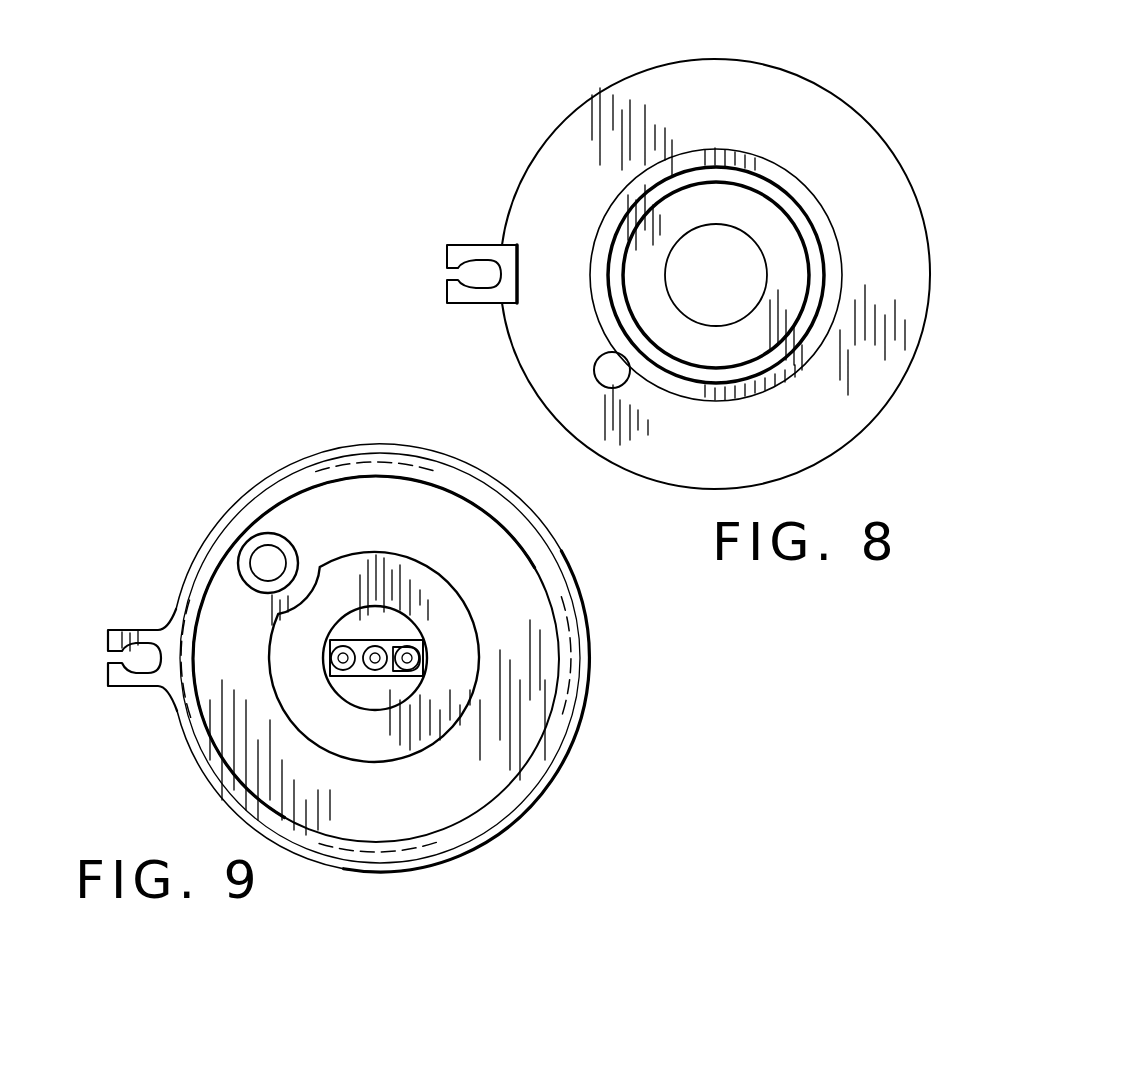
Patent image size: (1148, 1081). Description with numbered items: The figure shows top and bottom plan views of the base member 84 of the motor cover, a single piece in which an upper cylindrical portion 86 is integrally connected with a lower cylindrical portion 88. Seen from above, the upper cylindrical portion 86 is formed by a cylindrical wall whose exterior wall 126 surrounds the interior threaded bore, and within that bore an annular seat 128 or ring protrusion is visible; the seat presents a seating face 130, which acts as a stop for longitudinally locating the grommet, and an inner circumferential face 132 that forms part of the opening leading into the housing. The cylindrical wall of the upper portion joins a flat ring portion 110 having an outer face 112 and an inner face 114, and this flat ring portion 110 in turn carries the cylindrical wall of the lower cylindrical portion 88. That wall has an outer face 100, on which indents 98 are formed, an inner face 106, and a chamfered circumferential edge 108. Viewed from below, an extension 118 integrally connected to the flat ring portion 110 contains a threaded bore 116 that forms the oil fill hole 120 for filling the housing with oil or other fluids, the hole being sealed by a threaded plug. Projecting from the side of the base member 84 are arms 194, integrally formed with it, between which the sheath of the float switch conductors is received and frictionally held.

In FIG. 8, the base member 84 is at (840, 76).
In FIG. 9, the base member 84 is at (598, 738).
In FIG. 8, the upper cylindrical portion 86 is at (596, 206).
In FIG. 8, the lower cylindrical portion 88 is at (550, 122).
In FIG. 9, the lower cylindrical portion 88 is at (266, 462).
In FIG. 9, the indents 98 is at (373, 462).
In FIG. 9, the outer face 100 is at (556, 556).
In FIG. 9, the inner face 106 is at (470, 516).
In FIG. 9, the chamfered circumferential edge 108 is at (517, 788).
In FIG. 8, the flat ring portion 110 is at (862, 395).
In FIG. 9, the flat ring portion 110 is at (520, 600).
In FIG. 8, the outer face 112 is at (691, 119).
In FIG. 9, the inner face 114 is at (354, 526).
In FIG. 9, the threaded bore 116 is at (270, 550).
In FIG. 9, the extension 118 is at (278, 532).
In FIG. 9, the oil fill hole 120 is at (266, 567).
In FIG. 8, the exterior wall 126 is at (773, 388).
In FIG. 8, the annular seat 128 is at (762, 215).
In FIG. 8, the seating face 130 is at (699, 211).
In FIG. 8, the inner circumferential face 132 is at (752, 250).
In FIG. 8, the arms 194 is at (457, 255).
In FIG. 9, the arms 194 is at (122, 632).